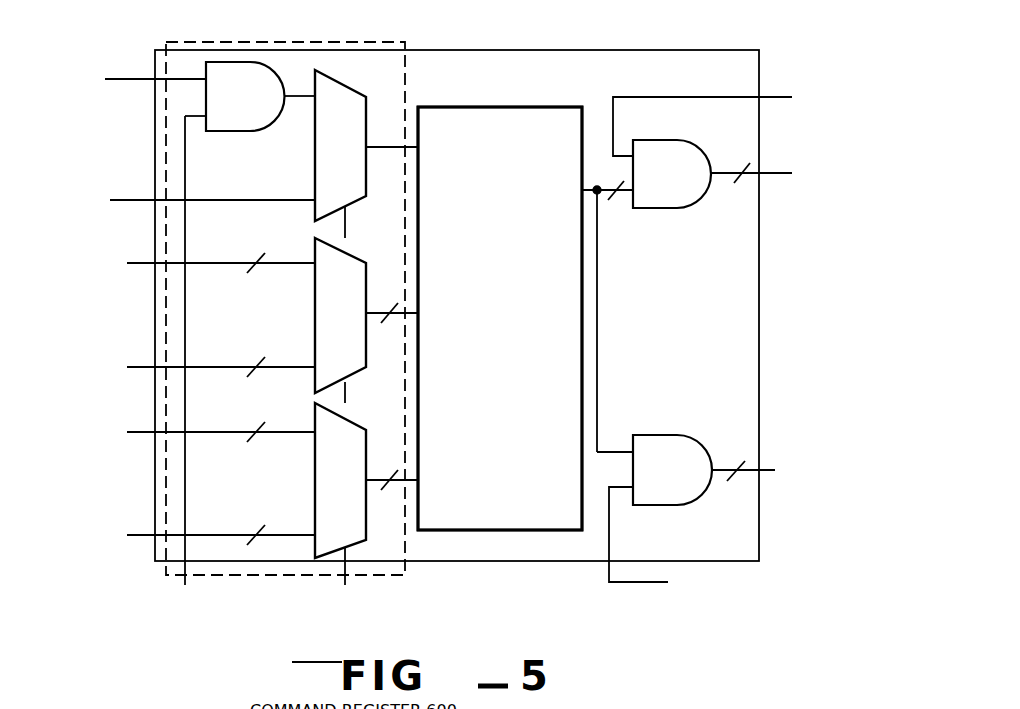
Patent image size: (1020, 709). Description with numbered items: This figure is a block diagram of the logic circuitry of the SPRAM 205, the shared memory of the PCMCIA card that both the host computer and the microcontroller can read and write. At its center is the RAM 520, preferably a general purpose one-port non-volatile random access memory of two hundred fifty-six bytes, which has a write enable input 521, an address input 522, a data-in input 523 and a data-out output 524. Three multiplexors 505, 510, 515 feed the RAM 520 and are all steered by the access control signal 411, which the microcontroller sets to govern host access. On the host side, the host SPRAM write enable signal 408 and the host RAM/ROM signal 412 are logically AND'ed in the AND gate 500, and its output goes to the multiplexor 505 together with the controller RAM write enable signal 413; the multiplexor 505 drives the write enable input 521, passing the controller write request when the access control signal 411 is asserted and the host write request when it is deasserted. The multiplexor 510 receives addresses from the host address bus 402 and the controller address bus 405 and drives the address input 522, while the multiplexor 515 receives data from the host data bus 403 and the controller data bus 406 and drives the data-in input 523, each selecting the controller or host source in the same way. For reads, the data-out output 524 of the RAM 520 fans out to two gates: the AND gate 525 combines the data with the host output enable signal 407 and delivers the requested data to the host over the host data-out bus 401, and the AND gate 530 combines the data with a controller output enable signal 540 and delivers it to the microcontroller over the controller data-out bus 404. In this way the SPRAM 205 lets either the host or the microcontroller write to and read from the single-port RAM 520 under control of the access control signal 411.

The SPRAM 205 is at (500, 301).
The host data-out bus 401 is at (788, 174).
The host address bus 402 is at (169, 271).
The host data bus 403 is at (165, 439).
The controller data-out bus 404 is at (800, 481).
The controller address bus 405 is at (165, 375).
The controller data bus 406 is at (169, 543).
The host RAM output enable (HROE#) signal 407 is at (738, 118).
The host SPRAM write enable (HSWE#) signal 408 is at (128, 86).
The access control (ACS#) signal 411 is at (345, 433).
The host RAM/ROM (HRR#) signal 412 is at (273, 338).
The controller RAM write enable (CRAWE#) signal 413 is at (165, 204).
The AND gate 500 is at (250, 96).
The multiplexor 505 is at (366, 145).
The multiplexor 510 is at (366, 315).
The multiplexor 515 is at (366, 480).
The RAM 520 is at (500, 318).
The write enable input 521 is at (427, 159).
The address input 522 is at (435, 327).
The data-in input 523 is at (418, 493).
The data-out output 524 is at (581, 311).
The AND gate 525 is at (672, 174).
The AND gate 530 is at (672, 470).
The controller output enable 540 is at (711, 550).